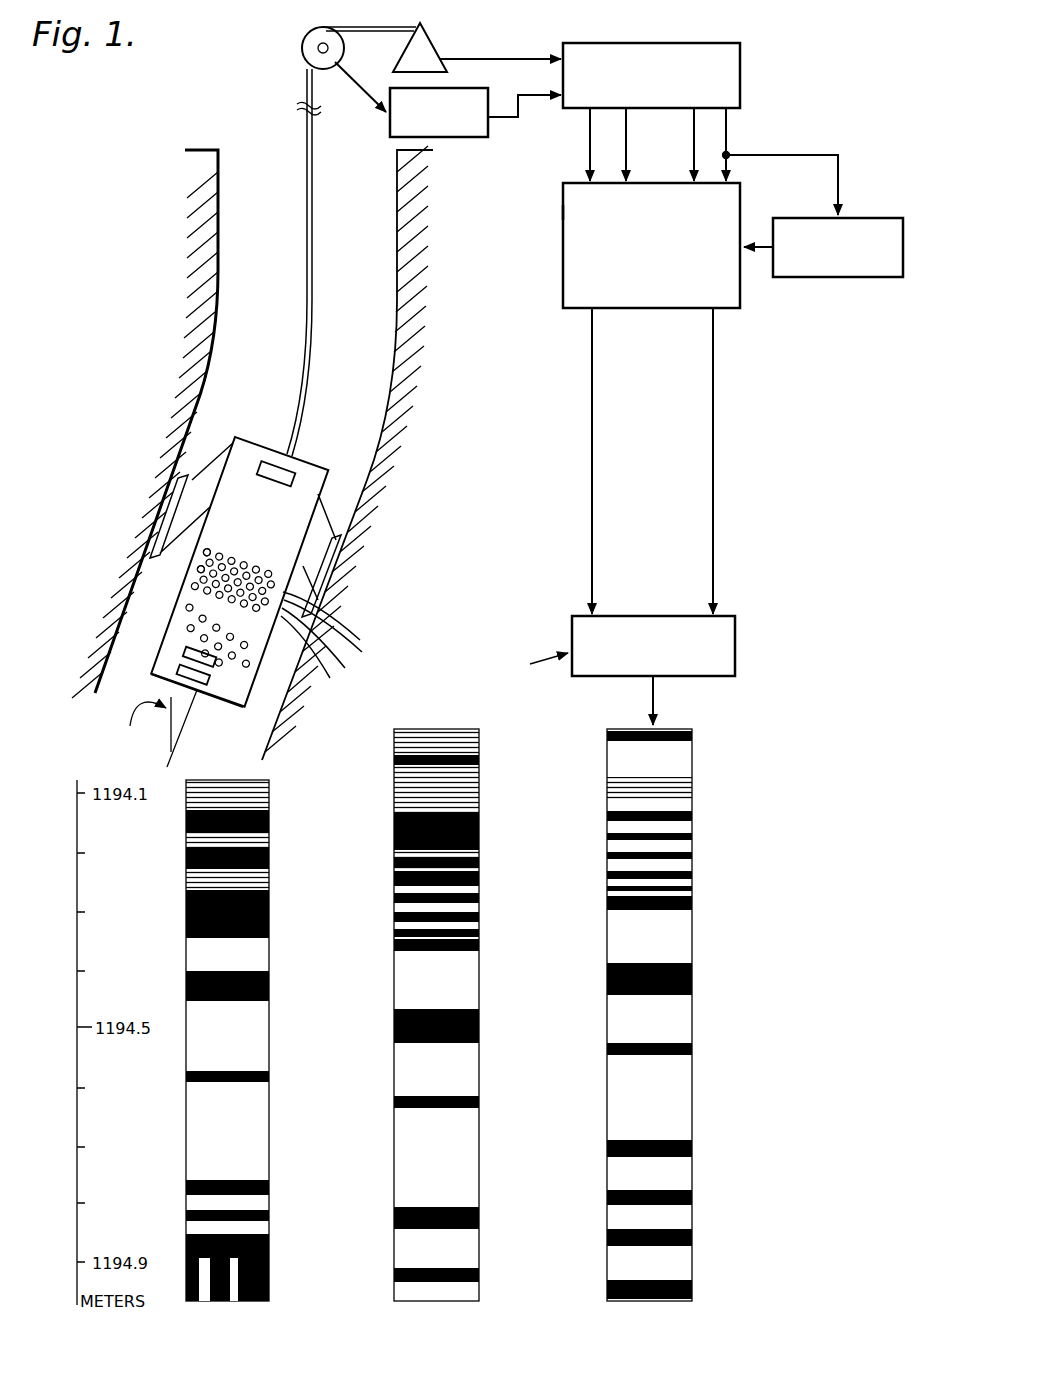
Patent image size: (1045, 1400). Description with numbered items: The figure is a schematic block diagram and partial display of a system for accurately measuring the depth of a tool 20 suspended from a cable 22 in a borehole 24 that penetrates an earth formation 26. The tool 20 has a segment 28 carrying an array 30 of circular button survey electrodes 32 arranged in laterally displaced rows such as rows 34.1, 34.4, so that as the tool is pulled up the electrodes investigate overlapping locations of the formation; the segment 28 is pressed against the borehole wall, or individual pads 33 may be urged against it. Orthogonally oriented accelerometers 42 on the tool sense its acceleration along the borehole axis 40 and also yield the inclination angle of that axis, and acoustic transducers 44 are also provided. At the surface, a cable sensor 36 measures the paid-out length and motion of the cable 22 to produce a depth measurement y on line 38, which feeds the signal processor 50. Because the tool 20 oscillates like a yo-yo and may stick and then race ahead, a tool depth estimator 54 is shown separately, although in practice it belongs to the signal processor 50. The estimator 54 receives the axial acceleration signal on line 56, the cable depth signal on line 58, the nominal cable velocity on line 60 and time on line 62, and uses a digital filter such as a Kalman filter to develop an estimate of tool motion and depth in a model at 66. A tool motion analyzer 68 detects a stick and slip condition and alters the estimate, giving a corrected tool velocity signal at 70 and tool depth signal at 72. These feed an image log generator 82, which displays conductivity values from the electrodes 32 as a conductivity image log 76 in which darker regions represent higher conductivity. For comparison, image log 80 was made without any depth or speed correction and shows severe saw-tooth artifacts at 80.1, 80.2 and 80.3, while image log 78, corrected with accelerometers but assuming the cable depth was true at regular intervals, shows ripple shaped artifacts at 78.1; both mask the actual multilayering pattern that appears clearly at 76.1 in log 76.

The tool 20 is at (158, 599).
The cable 22 is at (306, 188).
The borehole 24 is at (365, 253).
The earth formation 26 is at (176, 287).
The segment 28 is at (250, 673).
The array 30 is at (264, 556).
The survey electrodes 32 is at (297, 658).
The pads 33 is at (326, 582).
The row of electrodes 34.1 is at (176, 574).
The row of electrodes 34.4 is at (203, 552).
The cable sensor 36 is at (457, 138).
The line 38 is at (510, 118).
The borehole axis 40 is at (192, 714).
The accelerometers 42 is at (253, 458).
The acoustic transducers 44 is at (184, 662).
The signal processor 50 is at (680, 43).
The tool depth estimator 54 is at (552, 297).
The line 56 is at (727, 116).
The line 58 is at (634, 137).
The line 60 is at (588, 163).
The line 62 is at (692, 160).
The tool motion and depth model 66 is at (562, 212).
The tool motion analyzer 68 is at (840, 278).
The tool velocity signal output 70 is at (590, 362).
The tool depth signal output 72 is at (712, 347).
The conductivity image log 76 is at (702, 789).
The multilayering feature 76.1 is at (702, 887).
The image log 78 is at (487, 774).
The ripple shaped artifacts 78.1 is at (488, 940).
The image log 80 is at (284, 974).
The saw-tooth artifact 80.1 is at (180, 925).
The saw-tooth artifact 80.2 is at (180, 1081).
The saw-tooth artifact 80.3 is at (306, 1196).
The image log generator 82 is at (737, 641).